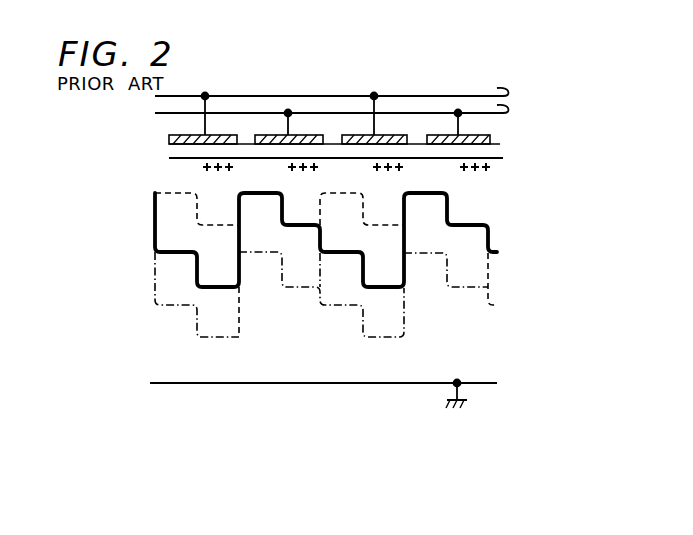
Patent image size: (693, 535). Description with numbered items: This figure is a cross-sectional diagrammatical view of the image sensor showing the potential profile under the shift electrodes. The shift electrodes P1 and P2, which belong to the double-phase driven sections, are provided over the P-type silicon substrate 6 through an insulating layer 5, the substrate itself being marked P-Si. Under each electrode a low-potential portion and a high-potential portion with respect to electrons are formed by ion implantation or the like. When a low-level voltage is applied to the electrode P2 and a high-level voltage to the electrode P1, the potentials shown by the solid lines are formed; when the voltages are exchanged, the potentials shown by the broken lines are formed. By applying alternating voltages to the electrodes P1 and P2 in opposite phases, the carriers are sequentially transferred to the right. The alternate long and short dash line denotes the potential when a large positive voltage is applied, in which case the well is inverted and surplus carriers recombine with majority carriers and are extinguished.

The insulating layer 5 is at (492, 153).
The P-type silicon substrate 6 is at (483, 192).
The shift electrode P1 is at (403, 111).
The shift electrode P2 is at (403, 124).
The P-type silicon substrate P-Si is at (325, 380).